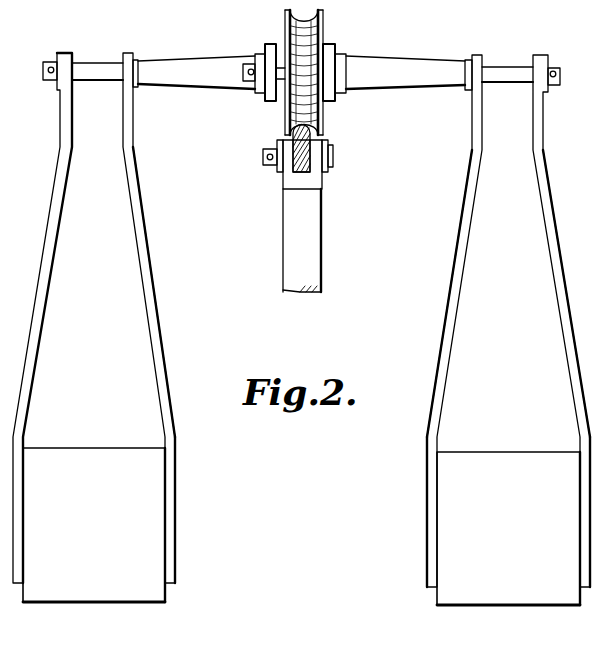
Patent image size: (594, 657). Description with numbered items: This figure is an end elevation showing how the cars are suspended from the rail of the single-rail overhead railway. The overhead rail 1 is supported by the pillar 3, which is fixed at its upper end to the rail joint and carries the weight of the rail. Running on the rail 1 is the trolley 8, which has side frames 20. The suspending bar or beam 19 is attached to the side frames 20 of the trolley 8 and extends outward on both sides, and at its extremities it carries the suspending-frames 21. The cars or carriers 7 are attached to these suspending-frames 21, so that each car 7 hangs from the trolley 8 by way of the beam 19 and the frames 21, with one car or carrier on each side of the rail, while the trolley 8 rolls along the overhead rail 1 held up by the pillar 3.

The overhead rail 1 is at (297, 160).
The pillar 3 is at (283, 245).
The car 7 is at (301, 526).
The trolley 8 is at (309, 94).
The suspending bar 19 is at (203, 73).
The side frames 20 is at (272, 47).
The suspending-frames 21 is at (148, 310).